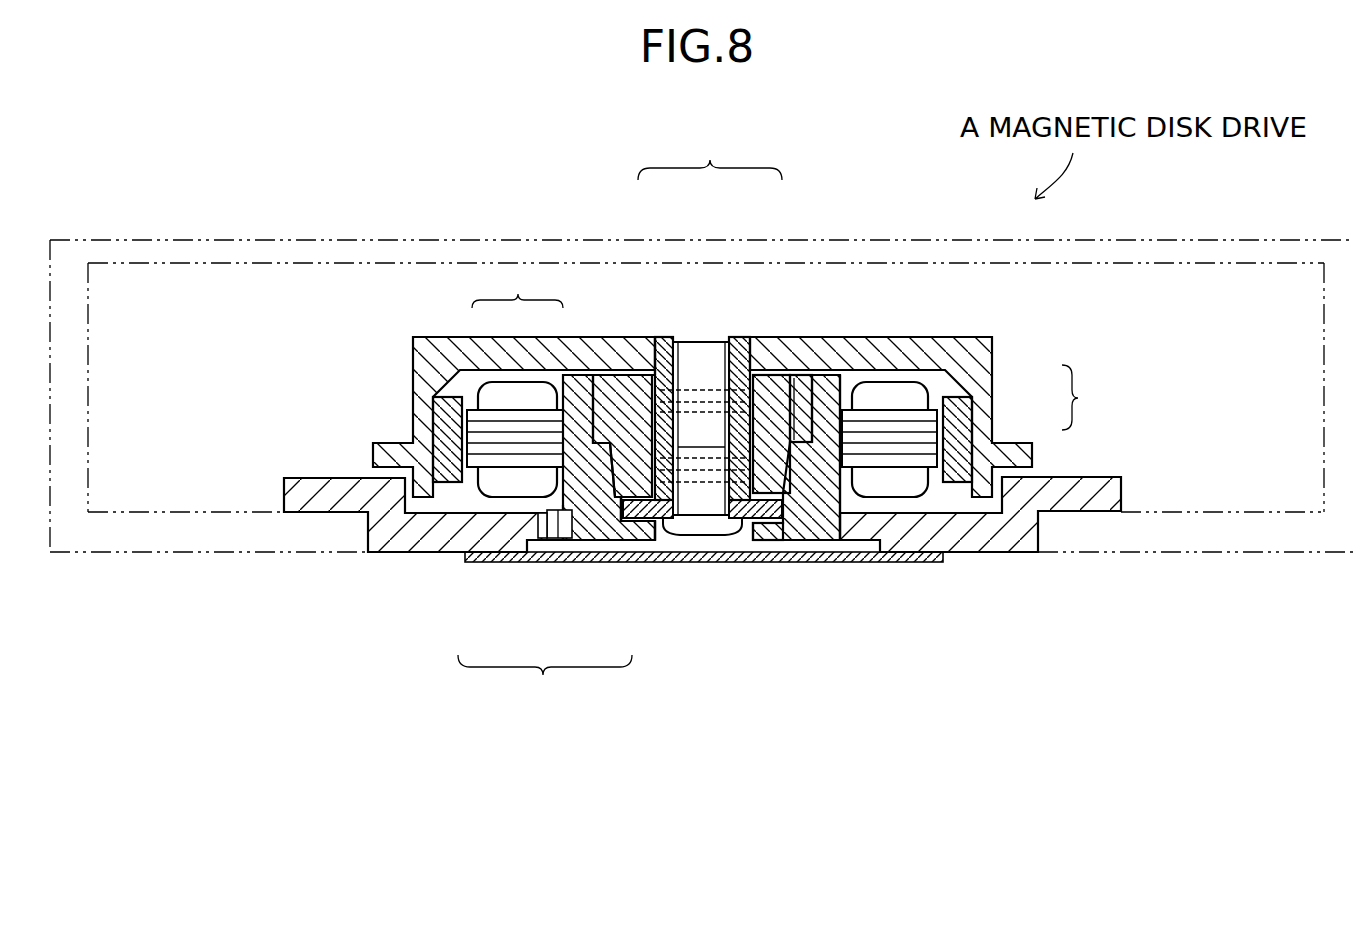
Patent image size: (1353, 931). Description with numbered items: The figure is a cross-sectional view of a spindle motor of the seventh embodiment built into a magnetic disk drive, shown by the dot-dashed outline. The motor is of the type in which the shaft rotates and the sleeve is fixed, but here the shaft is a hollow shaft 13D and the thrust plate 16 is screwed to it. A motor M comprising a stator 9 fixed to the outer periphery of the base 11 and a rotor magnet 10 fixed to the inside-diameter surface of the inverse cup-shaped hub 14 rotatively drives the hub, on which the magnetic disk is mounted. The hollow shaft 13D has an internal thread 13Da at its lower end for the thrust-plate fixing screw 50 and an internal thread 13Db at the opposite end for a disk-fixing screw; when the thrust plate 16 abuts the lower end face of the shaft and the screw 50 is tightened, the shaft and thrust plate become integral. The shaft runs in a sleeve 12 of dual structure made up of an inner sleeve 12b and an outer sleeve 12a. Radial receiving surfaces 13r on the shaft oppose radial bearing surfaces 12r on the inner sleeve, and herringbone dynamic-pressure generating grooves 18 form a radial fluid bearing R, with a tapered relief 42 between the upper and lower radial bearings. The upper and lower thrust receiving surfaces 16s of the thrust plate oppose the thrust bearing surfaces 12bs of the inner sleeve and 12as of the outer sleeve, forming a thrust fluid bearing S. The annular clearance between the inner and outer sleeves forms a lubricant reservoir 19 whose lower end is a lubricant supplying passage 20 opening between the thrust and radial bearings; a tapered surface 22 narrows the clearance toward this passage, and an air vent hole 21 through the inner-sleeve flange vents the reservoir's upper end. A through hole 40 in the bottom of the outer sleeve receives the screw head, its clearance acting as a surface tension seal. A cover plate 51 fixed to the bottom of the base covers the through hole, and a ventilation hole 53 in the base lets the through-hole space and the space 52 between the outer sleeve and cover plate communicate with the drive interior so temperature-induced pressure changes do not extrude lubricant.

The stator 9 is at (905, 387).
The rotor magnet 10 is at (960, 418).
The base 11 is at (1002, 546).
The sleeve 12 is at (530, 292).
The outer sleeve 12a is at (577, 390).
The inner sleeve 12b is at (607, 383).
The thrust bearing surface 12as is at (630, 502).
The thrust bearing surface 12bs is at (590, 508).
The radial bearing surfaces 12r is at (720, 388).
The hollow shaft 13D is at (663, 357).
The internal thread 13Da is at (683, 520).
The internal thread 13Db is at (653, 362).
The radial receiving surfaces 13r is at (748, 400).
The hub 14 is at (427, 352).
The thrust plate 16 is at (800, 522).
The thrust receiving surfaces 16s is at (640, 522).
The dynamic-pressure generating grooves 18 is at (697, 380).
The lubricant reservoir 19 is at (855, 535).
The lubricant supplying passage 20 is at (812, 500).
The air vent hole 21 is at (790, 455).
The tapered surface 22 is at (808, 445).
The through hole 40 is at (777, 532).
The relief 42 is at (645, 525).
The thrust-plate fixing screw 50 is at (725, 536).
The cover plate 51 is at (925, 560).
The space 52 is at (547, 540).
The ventilation hole 53 is at (540, 527).
The radial fluid bearing R is at (702, 149).
The motor M is at (1080, 411).
The thrust fluid bearing S is at (535, 707).